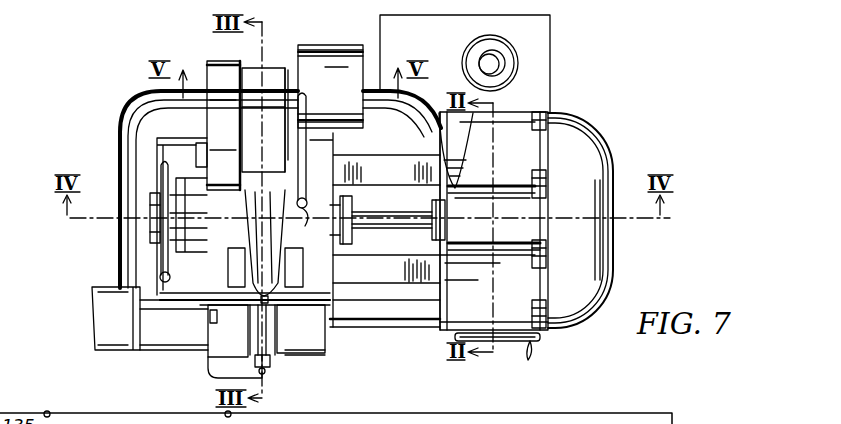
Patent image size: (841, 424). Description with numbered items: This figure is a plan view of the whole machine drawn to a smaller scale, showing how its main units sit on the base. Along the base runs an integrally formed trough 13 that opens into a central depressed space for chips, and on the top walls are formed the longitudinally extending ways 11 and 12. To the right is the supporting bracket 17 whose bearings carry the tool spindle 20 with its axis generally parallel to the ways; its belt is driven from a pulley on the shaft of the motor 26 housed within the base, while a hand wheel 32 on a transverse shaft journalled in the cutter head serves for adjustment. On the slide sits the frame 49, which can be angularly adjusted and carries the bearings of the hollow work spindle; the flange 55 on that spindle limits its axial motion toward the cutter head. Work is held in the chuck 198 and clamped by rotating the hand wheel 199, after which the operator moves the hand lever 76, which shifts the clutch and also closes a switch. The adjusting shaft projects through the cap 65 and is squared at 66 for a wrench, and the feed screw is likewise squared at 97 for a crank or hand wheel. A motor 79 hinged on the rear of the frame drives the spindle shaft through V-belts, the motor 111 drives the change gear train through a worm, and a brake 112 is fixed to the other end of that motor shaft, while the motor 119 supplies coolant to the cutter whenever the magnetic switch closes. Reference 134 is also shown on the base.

The trough 13 is at (120, 118).
The motor 79 is at (340, 62).
The motor 119 is at (498, 58).
The way 12 is at (372, 164).
The way 11 is at (372, 266).
The tool spindle 20 is at (458, 190).
The supporting bracket 17 is at (500, 196).
The motor 26 is at (612, 263).
The hand wheel 32 is at (540, 337).
The chuck 198 is at (352, 204).
The flange 55 is at (335, 262).
The frame 49 is at (246, 140).
The hand lever 76 is at (303, 212).
The hand wheel 199 is at (160, 270).
The brake 112 is at (102, 328).
The motor 111 is at (140, 352).
The cap 65 is at (240, 308).
The squared end 66 is at (283, 306).
The squared end 97 is at (268, 371).
The base frame 134 is at (52, 398).